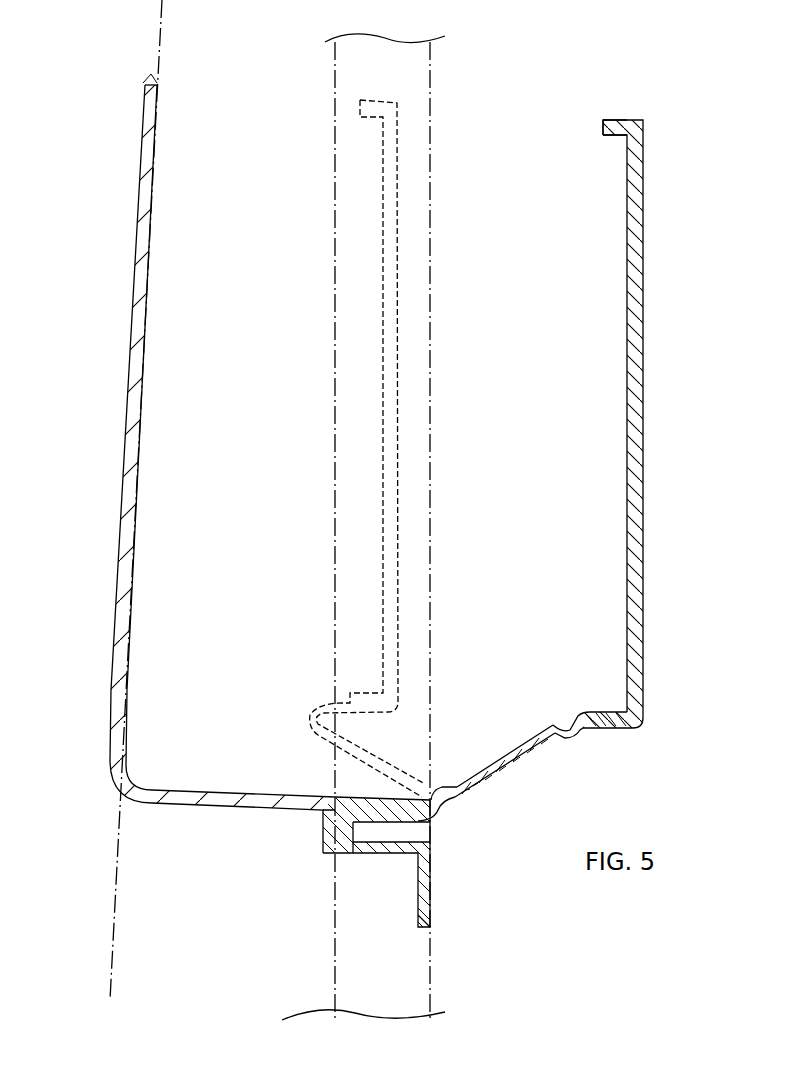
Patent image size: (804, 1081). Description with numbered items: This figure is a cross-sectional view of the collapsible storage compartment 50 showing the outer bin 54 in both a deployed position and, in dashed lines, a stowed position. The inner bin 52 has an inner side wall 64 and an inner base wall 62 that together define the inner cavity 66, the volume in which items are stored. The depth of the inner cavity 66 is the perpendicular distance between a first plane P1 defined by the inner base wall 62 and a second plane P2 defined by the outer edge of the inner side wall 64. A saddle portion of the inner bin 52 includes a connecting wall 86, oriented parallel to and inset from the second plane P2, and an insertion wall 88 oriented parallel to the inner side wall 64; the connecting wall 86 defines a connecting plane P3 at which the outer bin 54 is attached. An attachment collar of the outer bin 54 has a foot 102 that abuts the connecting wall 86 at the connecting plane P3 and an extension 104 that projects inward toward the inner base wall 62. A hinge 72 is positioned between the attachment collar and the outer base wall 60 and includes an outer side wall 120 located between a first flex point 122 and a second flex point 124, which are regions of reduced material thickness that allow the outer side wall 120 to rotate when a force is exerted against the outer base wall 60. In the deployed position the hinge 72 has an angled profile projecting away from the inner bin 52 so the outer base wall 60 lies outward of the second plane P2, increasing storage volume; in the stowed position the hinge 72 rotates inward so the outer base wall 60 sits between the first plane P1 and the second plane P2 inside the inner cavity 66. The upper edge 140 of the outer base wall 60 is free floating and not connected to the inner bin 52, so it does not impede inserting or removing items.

The storage compartment 50 is at (136, 93).
The inner bin 52 is at (145, 90).
The outer bin 54 is at (648, 138).
The outer base wall 60 is at (644, 325).
The inner base wall 62 is at (136, 450).
The inner side wall 64 is at (205, 795).
The inner cavity 66 is at (252, 158).
The hinge 72 is at (563, 768).
The connecting wall 86 is at (325, 828).
The insertion wall 88 is at (398, 852).
The foot 102 is at (345, 840).
The extension 104 is at (392, 812).
The outer side wall 120 is at (536, 760).
The first flex point 122 is at (433, 788).
The second flex point 124 is at (572, 722).
The upper edge 140 is at (622, 128).
The first plane P1 is at (115, 950).
The second plane P2 is at (425, 980).
The connecting plane P3 is at (330, 1018).